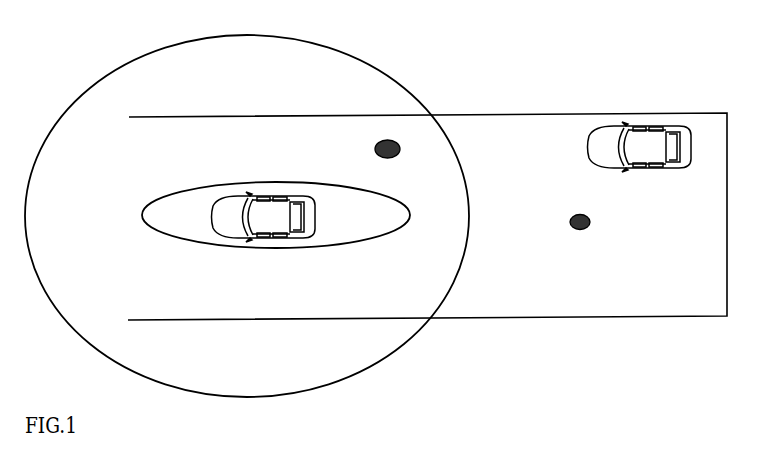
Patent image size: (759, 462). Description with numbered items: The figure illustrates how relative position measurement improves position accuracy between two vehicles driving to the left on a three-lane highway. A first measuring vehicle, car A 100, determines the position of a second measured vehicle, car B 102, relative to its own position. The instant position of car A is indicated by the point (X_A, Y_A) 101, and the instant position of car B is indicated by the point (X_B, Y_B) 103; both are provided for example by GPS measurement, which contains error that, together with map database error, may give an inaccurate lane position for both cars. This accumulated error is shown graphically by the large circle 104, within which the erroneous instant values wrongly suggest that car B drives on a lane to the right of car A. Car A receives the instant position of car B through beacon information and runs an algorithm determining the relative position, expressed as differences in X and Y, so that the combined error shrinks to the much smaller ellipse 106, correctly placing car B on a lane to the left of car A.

The car A 100 is at (640, 120).
The point (X_A, Y_A) 101 is at (550, 229).
The car B 102 is at (300, 217).
The point (X_B, Y_B) 103 is at (358, 153).
The circle 104 is at (247, 216).
The ellipse 106 is at (276, 252).